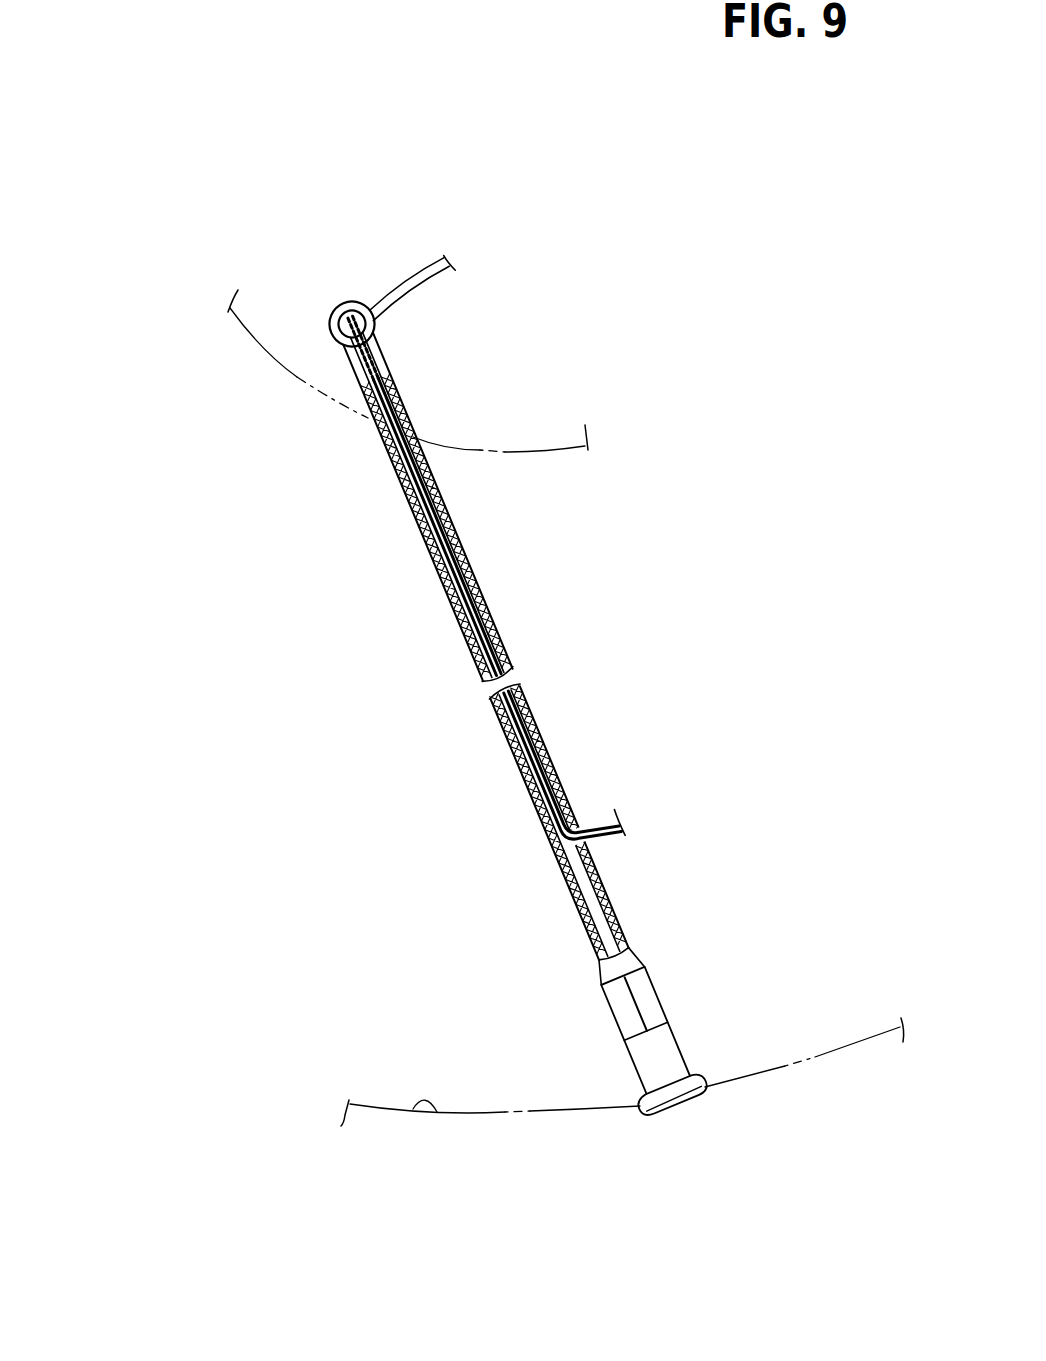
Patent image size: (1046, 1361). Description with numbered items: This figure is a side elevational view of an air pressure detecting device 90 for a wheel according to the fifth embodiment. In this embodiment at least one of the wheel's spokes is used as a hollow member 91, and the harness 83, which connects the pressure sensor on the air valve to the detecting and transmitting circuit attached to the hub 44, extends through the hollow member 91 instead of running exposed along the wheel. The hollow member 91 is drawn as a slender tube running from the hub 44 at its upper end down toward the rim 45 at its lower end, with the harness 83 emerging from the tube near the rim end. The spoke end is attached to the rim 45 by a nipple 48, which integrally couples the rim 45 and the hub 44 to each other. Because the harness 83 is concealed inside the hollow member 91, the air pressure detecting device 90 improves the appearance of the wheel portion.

The air pressure detecting device 90 is at (243, 193).
The hub 44 is at (250, 342).
The harness 83 is at (590, 826).
The hollow member 91 is at (600, 884).
The nipple 48 is at (668, 1024).
The rim 45 is at (413, 1108).